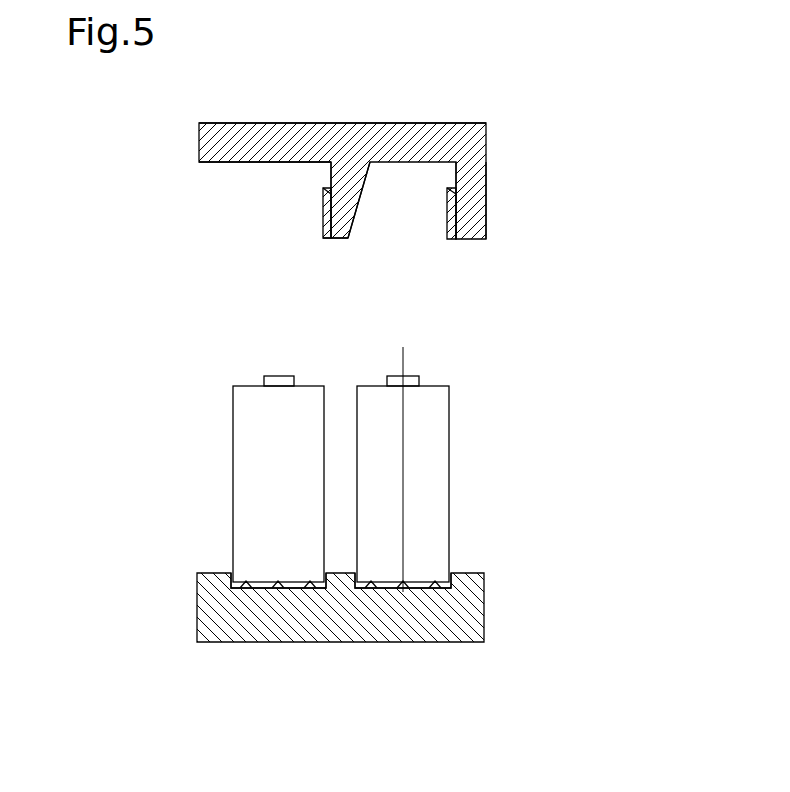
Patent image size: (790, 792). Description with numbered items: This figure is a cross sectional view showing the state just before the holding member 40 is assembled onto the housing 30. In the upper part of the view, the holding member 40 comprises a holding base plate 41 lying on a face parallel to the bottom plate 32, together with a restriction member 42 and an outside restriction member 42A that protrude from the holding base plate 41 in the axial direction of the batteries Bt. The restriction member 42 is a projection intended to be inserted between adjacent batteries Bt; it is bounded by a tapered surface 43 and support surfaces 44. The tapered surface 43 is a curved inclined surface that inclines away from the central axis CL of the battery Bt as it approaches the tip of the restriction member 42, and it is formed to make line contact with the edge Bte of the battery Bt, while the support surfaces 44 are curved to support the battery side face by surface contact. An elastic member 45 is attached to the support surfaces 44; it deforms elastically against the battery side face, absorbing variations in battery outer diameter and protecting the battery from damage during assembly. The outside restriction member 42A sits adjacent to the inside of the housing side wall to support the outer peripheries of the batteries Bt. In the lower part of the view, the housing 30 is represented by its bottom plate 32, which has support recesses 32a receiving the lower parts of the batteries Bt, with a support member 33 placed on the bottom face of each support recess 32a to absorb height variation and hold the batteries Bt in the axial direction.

The holding member 40 is at (465, 118).
The holding base plate 41 is at (352, 121).
The restriction member 42 is at (331, 182).
The outside restriction member 42A is at (487, 163).
The tapered surface 43 is at (358, 208).
The support surface 44 is at (320, 238).
The elastic member 45 is at (327, 210).
The battery Bt is at (449, 432).
The edge of the battery Bte is at (357, 384).
The central axis of the battery CL is at (404, 495).
The bottom plate 32 is at (484, 577).
The housing 30 is at (422, 597).
The support member 33 is at (463, 645).
The support recess 32a is at (392, 574).